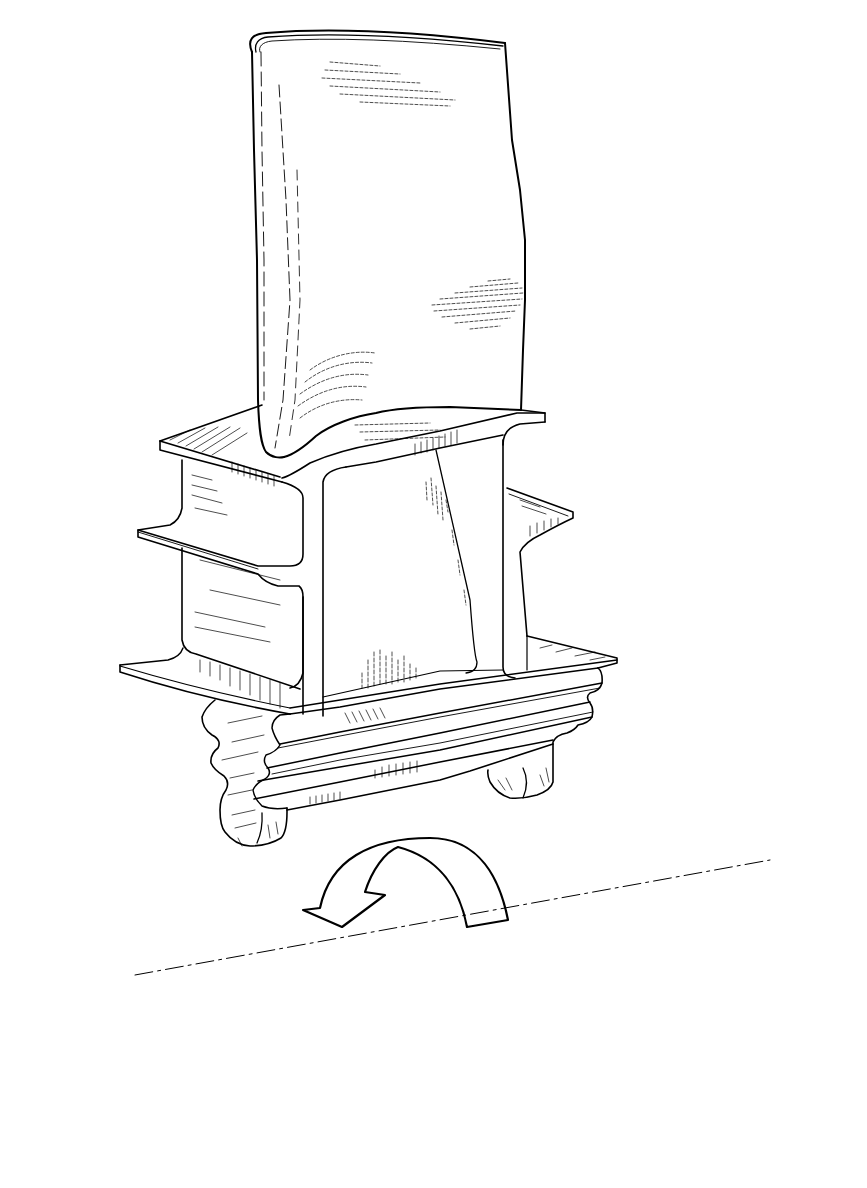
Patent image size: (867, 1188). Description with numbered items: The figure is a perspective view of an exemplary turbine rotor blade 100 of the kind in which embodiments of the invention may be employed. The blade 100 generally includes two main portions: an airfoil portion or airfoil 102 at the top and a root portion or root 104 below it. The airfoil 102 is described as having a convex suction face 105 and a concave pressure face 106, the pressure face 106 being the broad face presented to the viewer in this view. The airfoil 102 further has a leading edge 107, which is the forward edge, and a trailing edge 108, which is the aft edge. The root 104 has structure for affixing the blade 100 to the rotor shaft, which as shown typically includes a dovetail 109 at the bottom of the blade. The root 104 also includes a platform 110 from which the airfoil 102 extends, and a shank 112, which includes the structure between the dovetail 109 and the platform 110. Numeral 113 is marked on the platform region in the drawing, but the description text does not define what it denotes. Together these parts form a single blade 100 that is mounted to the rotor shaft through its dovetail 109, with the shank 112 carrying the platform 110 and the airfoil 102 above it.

The turbine rotor blade 100 is at (637, 290).
The airfoil 102 is at (487, 127).
The root 104 is at (632, 738).
The suction face 105 is at (234, 183).
The pressure face 106 is at (428, 286).
The leading edge 107 is at (280, 320).
The trailing edge 108 is at (523, 193).
The dovetail 109 is at (226, 836).
The platform 110 is at (192, 433).
The shank 112 is at (114, 609).
The platform top surface 113 is at (254, 451).